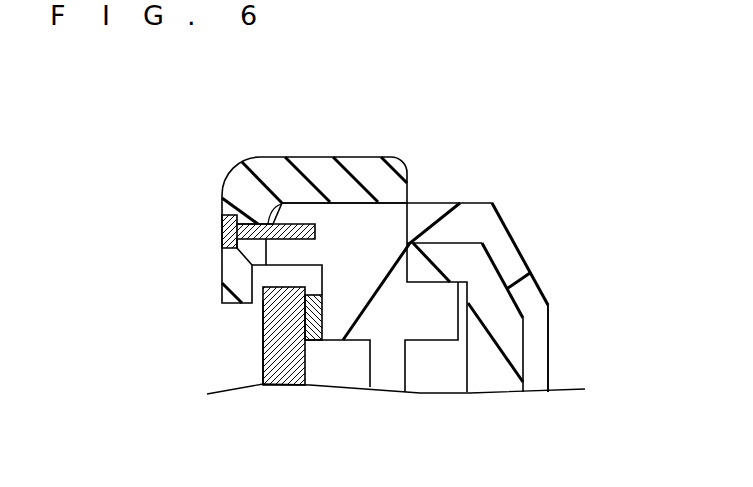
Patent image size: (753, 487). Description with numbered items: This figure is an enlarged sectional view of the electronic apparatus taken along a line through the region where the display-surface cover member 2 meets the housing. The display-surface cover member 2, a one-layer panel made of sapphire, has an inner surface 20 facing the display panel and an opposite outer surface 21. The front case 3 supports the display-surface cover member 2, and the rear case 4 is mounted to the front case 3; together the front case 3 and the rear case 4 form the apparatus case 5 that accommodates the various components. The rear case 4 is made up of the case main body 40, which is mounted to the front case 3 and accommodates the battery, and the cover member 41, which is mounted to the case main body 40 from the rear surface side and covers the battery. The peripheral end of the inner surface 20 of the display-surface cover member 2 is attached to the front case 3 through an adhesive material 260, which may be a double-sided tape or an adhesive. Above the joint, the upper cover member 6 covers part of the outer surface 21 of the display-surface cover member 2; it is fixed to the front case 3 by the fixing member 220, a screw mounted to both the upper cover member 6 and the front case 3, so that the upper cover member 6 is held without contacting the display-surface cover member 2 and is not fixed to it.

The display-surface cover member 2 is at (251, 381).
The inner surface 20 is at (305, 363).
The outer surface 21 is at (263, 337).
The fixing member 220 is at (222, 233).
The adhesive material 260 is at (322, 318).
The front case 3 is at (388, 230).
The rear case 4 is at (587, 225).
The case main body 40 is at (507, 325).
The cover member 41 is at (512, 268).
The apparatus case 5 is at (516, 210).
The upper cover member 6 is at (315, 167).